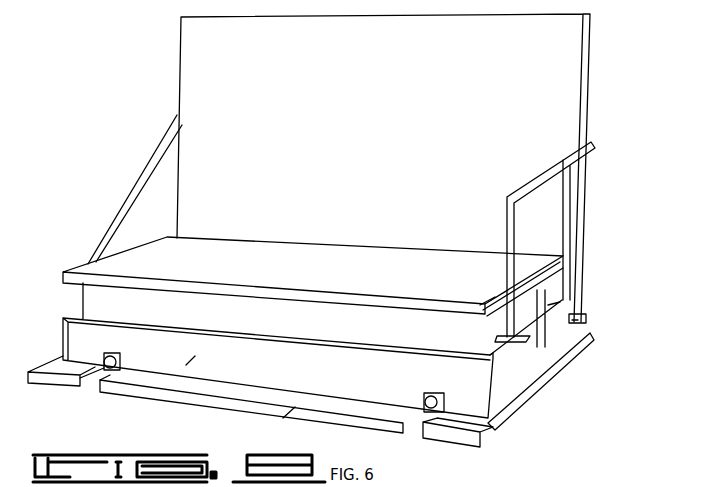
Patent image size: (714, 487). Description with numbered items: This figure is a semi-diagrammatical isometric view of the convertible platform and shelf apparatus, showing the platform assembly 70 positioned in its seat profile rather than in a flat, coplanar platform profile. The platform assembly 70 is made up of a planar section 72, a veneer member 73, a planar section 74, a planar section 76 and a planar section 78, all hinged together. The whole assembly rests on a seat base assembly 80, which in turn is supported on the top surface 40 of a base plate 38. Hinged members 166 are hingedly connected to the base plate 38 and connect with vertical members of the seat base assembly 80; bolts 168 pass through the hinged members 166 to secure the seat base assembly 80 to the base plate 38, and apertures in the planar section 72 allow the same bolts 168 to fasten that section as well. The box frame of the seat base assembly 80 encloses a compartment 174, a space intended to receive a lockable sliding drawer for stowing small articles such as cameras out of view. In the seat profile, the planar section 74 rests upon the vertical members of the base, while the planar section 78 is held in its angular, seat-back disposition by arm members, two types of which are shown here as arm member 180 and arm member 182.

The platform assembly 70 is at (548, 57).
The planar section 78 is at (571, 92).
The arm member 180 is at (160, 176).
The arm member 182 is at (548, 165).
The planar section 74 is at (312, 258).
The veneer member 73 is at (100, 300).
The planar section 76 is at (560, 302).
The seat base assembly 80 is at (578, 320).
The compartment 174 is at (522, 357).
The bolts 168 is at (114, 358).
The hinged members 166 is at (98, 382).
The planar section 72 is at (163, 400).
The top surface 40 is at (225, 398).
The base plate 38 is at (290, 414).